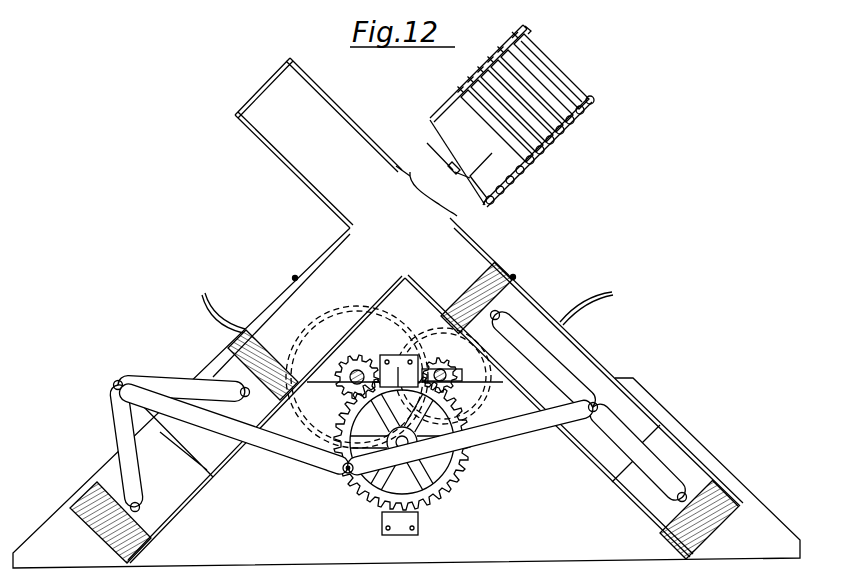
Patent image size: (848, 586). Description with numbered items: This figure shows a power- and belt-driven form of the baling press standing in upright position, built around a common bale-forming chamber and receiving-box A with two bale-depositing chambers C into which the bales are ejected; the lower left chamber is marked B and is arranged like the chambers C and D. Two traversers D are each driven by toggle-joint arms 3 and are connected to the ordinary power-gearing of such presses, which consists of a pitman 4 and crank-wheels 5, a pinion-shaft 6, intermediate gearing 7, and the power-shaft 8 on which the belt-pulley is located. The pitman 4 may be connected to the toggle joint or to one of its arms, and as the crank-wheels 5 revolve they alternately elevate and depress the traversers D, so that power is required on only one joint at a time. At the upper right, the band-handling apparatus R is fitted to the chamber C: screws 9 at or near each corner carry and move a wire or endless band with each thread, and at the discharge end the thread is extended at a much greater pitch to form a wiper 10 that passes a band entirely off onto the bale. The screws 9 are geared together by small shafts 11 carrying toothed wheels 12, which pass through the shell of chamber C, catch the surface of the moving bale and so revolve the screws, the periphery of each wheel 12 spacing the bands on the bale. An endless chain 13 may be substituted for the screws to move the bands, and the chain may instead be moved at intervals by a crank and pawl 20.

The bale-forming chamber A is at (406, 391).
The lower left cylinder B is at (250, 352).
The bale-depositing chamber C is at (425, 135).
The traverser D is at (510, 300).
The roller assembly R is at (528, 95).
The toggle-joint arms 3 is at (148, 374).
The pitman 4 is at (298, 458).
The crank-wheels 5 is at (460, 474).
The pinion-shaft 6 is at (345, 384).
The intermediate gearing 7 is at (395, 355).
The power-shaft 8 is at (450, 380).
The screws 9 is at (480, 55).
The wiper 10 is at (526, 30).
The small shafts 11 is at (447, 160).
The toothed wheels 12 is at (458, 168).
The endless chain 13 is at (531, 160).
The crank and pawl 20 is at (491, 179).